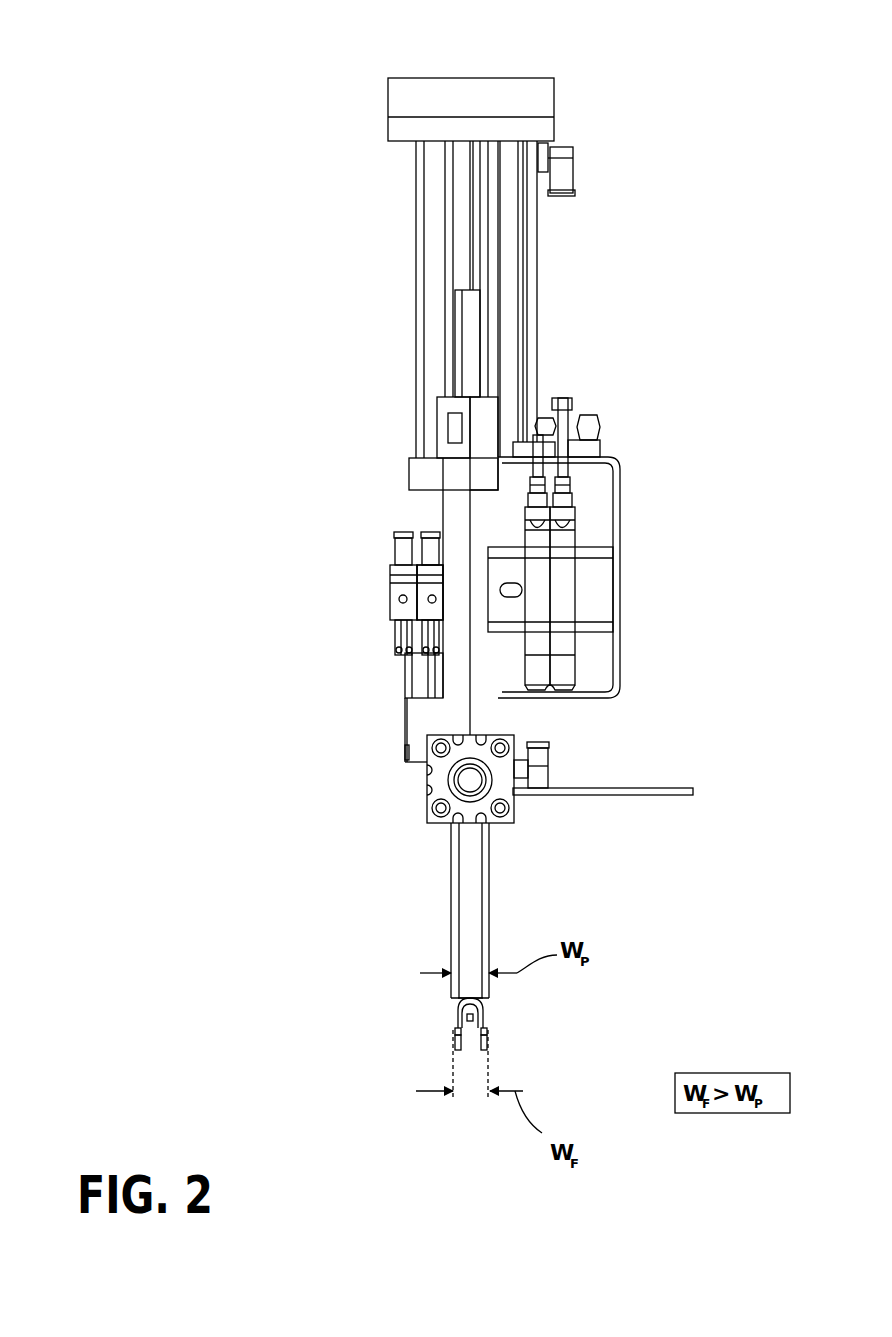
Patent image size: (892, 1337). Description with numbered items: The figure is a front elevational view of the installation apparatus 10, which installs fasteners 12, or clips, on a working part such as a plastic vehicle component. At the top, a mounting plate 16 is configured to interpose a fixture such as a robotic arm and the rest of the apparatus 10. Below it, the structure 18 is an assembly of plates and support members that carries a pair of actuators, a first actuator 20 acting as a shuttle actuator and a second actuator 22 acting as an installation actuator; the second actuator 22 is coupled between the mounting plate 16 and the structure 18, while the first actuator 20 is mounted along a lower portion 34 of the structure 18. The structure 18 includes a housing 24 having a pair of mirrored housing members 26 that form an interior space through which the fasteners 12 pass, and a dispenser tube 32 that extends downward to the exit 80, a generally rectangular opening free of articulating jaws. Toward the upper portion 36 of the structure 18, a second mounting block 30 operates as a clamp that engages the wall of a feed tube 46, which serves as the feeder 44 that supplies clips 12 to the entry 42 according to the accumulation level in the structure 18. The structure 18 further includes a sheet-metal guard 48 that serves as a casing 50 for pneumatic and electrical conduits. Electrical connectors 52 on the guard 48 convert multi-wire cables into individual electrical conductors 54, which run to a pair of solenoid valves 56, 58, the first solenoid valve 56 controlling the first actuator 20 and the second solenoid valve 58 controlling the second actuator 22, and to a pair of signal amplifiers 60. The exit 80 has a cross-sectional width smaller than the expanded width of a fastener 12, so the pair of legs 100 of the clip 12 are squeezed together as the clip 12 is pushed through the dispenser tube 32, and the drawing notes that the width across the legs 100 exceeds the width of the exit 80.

The installation apparatus 10 is at (679, 80).
The fastener 12 is at (488, 1019).
The mounting plate 16 is at (432, 78).
The structure 18 is at (370, 485).
The first actuator 20 is at (430, 803).
The second actuator 22 is at (416, 182).
The housing 24 is at (400, 752).
The housing members 26 is at (445, 670).
The second mounting block 30 is at (455, 402).
The dispenser tube 32 is at (488, 875).
The lower portion 34 is at (567, 760).
The upper portion 36 is at (602, 435).
The entry 42 is at (485, 452).
The feeder 44 is at (497, 313).
The feed tube 46 is at (458, 308).
The guard 48 is at (597, 650).
The casing 50 is at (622, 478).
The electrical connectors 52 is at (538, 440).
The electrical conductors 54 is at (552, 428).
The first solenoid valve 56 is at (437, 585).
The second solenoid valve 58 is at (430, 592).
The signal amplifiers 60 is at (540, 588).
The exit 80 is at (460, 1000).
The legs 100 is at (455, 1030).